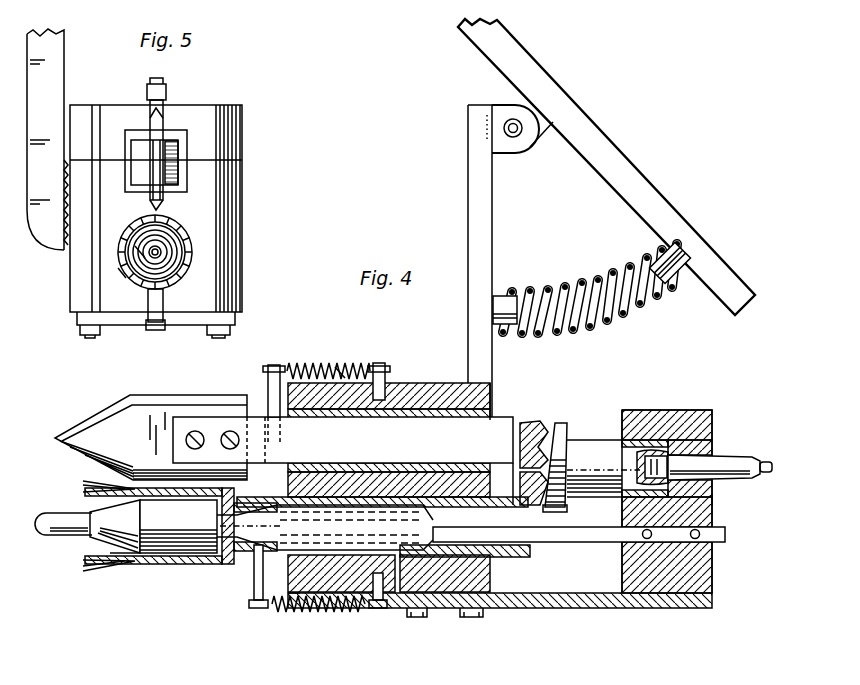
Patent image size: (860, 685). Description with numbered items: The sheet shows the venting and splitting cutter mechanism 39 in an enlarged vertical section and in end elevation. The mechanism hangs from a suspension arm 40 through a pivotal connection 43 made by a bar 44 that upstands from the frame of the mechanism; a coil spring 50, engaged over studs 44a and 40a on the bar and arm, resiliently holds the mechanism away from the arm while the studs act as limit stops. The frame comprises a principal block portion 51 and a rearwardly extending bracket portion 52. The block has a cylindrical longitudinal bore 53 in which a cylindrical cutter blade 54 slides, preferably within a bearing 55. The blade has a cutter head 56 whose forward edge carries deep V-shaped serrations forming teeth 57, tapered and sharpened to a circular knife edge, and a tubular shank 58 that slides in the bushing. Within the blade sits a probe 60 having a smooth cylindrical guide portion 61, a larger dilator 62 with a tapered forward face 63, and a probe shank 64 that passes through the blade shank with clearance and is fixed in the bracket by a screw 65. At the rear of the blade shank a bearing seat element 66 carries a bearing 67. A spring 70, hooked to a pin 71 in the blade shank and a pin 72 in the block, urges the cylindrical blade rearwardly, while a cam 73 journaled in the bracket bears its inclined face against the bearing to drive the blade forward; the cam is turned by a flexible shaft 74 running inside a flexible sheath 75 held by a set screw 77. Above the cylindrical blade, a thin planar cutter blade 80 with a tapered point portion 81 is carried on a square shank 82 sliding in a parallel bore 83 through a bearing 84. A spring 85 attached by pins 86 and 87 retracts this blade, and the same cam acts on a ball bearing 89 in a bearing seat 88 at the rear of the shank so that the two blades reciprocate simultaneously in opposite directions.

In FIG. 4, the cutter mechanism 39 is at (640, 395).
In FIG. 4, the suspension arm 40 is at (627, 172).
In FIG. 4, the stud 40a is at (656, 258).
In FIG. 4, the pivotal connection 43 is at (512, 120).
In FIG. 5, the bar 44 is at (48, 85).
In FIG. 4, the bar 44 is at (475, 228).
In FIG. 4, the stud 44a is at (503, 303).
In FIG. 4, the coil spring 50 is at (586, 290).
In FIG. 5, the block portion 51 is at (232, 118).
In FIG. 4, the block portion 51 is at (450, 384).
In FIG. 4, the bracket portion 52 is at (665, 600).
In FIG. 4, the bore 53 is at (300, 596).
In FIG. 5, the cutter blade 54 is at (120, 272).
In FIG. 4, the cutter blade 54 is at (226, 568).
In FIG. 4, the bearing 55 is at (405, 555).
In FIG. 4, the cutter head 56 is at (158, 540).
In FIG. 5, the teeth 57 is at (186, 262).
In FIG. 4, the teeth 57 is at (110, 563).
In FIG. 4, the tubular shank 58 is at (520, 558).
In FIG. 5, the probe 60 is at (140, 252).
In FIG. 4, the probe 60 is at (197, 530).
In FIG. 5, the guide portion 61 is at (160, 250).
In FIG. 4, the guide portion 61 is at (60, 520).
In FIG. 4, the dilator 62 is at (133, 562).
In FIG. 5, the forward face 63 is at (180, 253).
In FIG. 4, the forward face 63 is at (103, 520).
In FIG. 4, the probe shank 64 is at (562, 545).
In FIG. 4, the screw 65 is at (712, 500).
In FIG. 4, the bearing seat element 66 is at (518, 482).
In FIG. 4, the bearing 67 is at (552, 510).
In FIG. 5, the spring 70 is at (165, 322).
In FIG. 4, the spring 70 is at (345, 612).
In FIG. 5, the pin 71 is at (153, 300).
In FIG. 4, the pin 71 is at (258, 585).
In FIG. 4, the pin 72 is at (383, 606).
In FIG. 4, the cam 73 is at (588, 440).
In FIG. 4, the flexible shaft 74 is at (764, 462).
In FIG. 4, the flexible sheath 75 is at (718, 460).
In FIG. 4, the set screw 77 is at (703, 410).
In FIG. 5, the cutter blade 80 is at (160, 155).
In FIG. 4, the cutter blade 80 is at (150, 420).
In FIG. 4, the point portion 81 is at (97, 440).
In FIG. 5, the shank 82 is at (172, 175).
In FIG. 4, the shank 82 is at (482, 432).
In FIG. 4, the bore 83 is at (338, 370).
In FIG. 5, the bearing 84 is at (138, 132).
In FIG. 4, the bearing 84 is at (491, 400).
In FIG. 5, the spring 85 is at (165, 103).
In FIG. 4, the spring 85 is at (340, 375).
In FIG. 5, the pin 86 is at (162, 82).
In FIG. 4, the pin 86 is at (266, 385).
In FIG. 4, the pin 87 is at (388, 366).
In FIG. 4, the bearing seat 88 is at (535, 425).
In FIG. 4, the ball bearing 89 is at (560, 425).